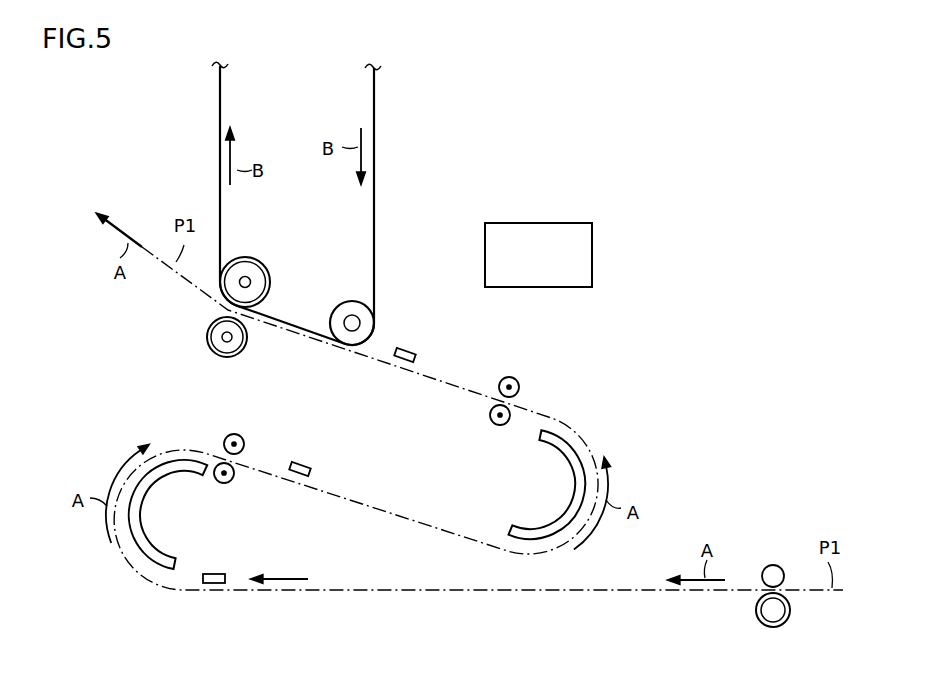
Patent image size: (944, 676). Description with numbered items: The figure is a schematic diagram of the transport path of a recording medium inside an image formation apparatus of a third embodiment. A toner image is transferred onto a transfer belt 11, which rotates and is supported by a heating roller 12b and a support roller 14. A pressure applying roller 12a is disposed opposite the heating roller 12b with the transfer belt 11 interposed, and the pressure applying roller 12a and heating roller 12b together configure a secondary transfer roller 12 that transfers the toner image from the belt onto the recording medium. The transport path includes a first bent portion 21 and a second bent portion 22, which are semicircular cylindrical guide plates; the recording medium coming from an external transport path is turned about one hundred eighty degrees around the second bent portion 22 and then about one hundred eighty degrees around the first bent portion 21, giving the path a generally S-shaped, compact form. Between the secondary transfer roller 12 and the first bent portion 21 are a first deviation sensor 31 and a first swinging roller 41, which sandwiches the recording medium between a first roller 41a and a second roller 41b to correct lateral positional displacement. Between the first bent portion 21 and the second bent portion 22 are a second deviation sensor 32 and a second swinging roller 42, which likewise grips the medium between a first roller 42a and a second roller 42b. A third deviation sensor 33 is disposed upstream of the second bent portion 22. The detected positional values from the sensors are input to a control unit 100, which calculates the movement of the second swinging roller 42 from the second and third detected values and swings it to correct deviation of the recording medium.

The transfer belt 11 is at (218, 115).
The secondary transfer roller 12 is at (203, 288).
The pressure applying roller 12a is at (205, 343).
The heating roller 12b is at (253, 257).
The support roller 14 is at (347, 300).
The first bent portion 21 is at (574, 483).
The second bent portion 22 is at (143, 517).
The first deviation sensor 31 is at (409, 345).
The second deviation sensor 32 is at (304, 460).
The third deviation sensor 33 is at (215, 572).
The first swinging roller 41 is at (494, 385).
The first roller 41a is at (515, 376).
The second roller 41b is at (497, 428).
The second swinging roller 42 is at (217, 449).
The first roller 42a is at (238, 432).
The second roller 42b is at (226, 485).
The control unit 100 is at (518, 222).